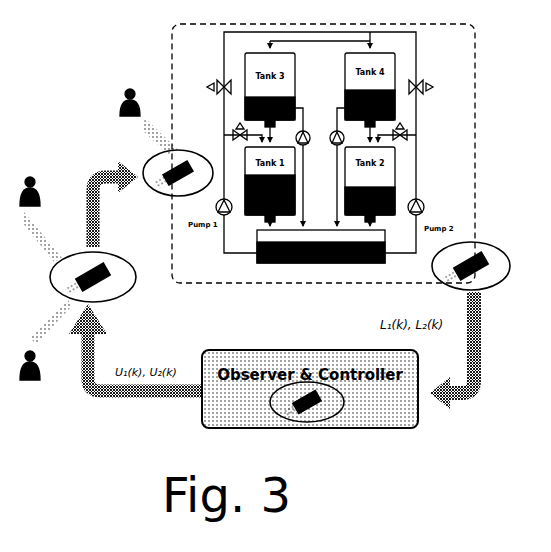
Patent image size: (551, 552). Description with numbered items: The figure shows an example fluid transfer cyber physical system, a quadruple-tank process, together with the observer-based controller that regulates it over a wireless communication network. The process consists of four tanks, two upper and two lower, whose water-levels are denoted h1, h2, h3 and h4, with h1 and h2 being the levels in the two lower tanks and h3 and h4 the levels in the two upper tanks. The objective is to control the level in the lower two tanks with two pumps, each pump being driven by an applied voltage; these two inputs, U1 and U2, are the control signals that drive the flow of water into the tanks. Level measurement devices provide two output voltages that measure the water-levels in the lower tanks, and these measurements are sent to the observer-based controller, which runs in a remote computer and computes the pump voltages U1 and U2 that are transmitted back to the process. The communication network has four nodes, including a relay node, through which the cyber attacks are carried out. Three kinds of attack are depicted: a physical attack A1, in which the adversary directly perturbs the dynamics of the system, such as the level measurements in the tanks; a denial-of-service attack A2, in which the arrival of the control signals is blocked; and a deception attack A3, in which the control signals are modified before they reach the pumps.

The physical attack A1 is at (130, 114).
The DoS attack A2 is at (30, 180).
The deception attack A3 is at (30, 377).
The water-level in tank 1 h1 is at (238, 174).
The water-level in tank 2 h2 is at (403, 184).
The water-level in tank 3 h3 is at (238, 94).
The water-level in tank 4 h4 is at (402, 88).
The input voltage to pump 1 U1 is at (203, 209).
The input voltage to pump 2 U2 is at (437, 211).